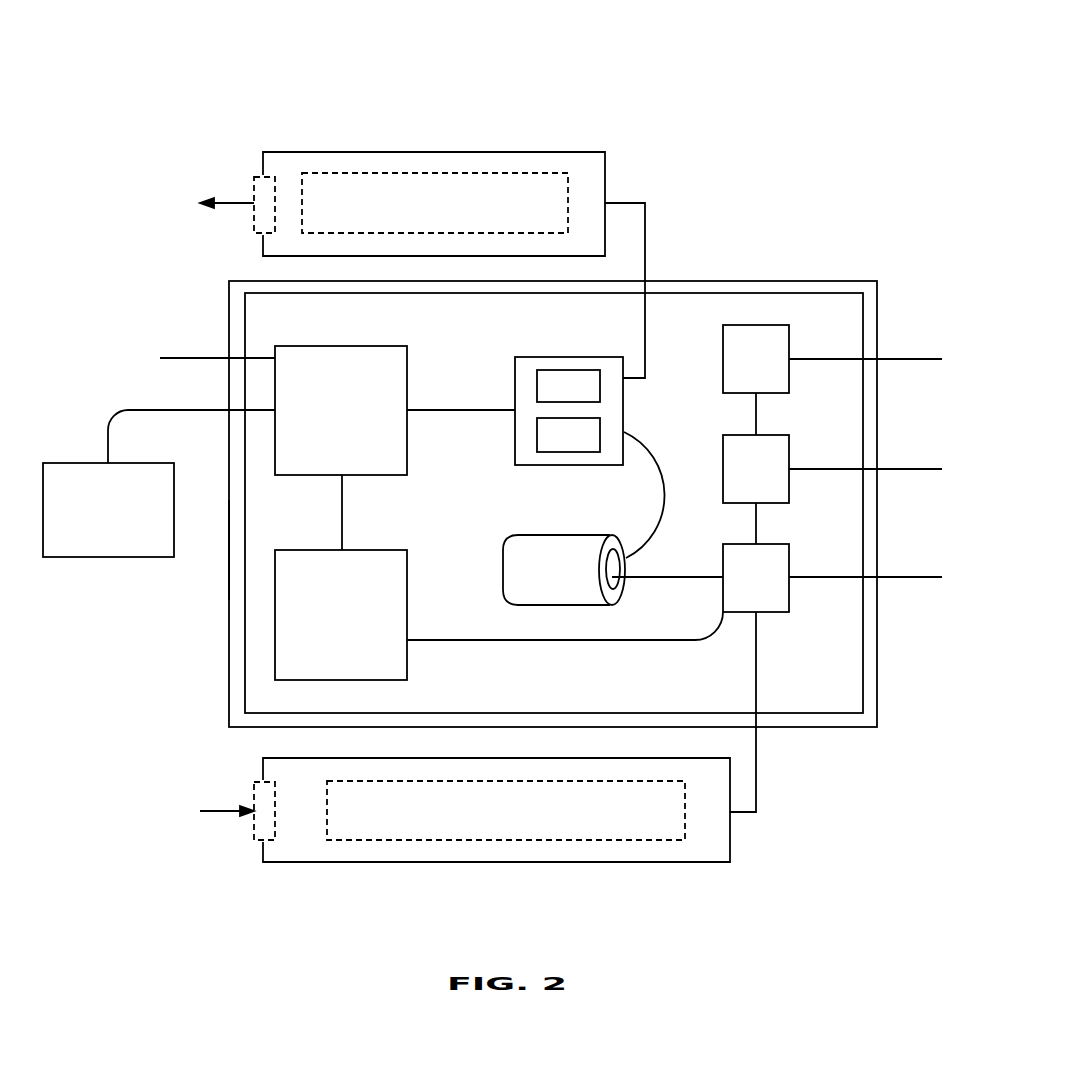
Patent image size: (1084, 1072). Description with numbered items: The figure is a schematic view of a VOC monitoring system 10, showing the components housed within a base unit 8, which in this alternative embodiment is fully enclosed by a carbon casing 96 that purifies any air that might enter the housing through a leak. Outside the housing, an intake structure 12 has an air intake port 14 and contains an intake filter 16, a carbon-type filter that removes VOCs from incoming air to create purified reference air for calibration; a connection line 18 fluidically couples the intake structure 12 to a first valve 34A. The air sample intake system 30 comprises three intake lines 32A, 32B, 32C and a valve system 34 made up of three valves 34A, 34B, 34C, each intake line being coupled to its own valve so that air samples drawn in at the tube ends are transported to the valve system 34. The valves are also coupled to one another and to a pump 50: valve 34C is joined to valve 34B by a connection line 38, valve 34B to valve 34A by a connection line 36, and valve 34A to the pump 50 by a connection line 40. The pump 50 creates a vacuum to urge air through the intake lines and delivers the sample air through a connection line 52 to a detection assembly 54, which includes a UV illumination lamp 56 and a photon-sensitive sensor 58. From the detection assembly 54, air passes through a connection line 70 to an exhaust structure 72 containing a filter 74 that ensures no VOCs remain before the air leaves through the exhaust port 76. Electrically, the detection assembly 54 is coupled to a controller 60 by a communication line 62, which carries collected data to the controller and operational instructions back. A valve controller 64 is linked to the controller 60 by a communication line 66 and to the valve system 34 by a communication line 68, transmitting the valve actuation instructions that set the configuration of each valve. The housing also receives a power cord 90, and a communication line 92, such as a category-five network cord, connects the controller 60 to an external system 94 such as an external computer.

The base unit 8 is at (243, 592).
The VOC monitoring system 10 is at (244, 70).
The intake structure 12 is at (552, 862).
The air intake port 14 is at (252, 822).
The intake filter 16 is at (407, 842).
The connection line 18 is at (756, 752).
The air sample intake system 30 is at (893, 296).
The intake line 32A is at (901, 578).
The intake line 32B is at (901, 470).
The intake line 32C is at (901, 360).
The valve system 34 is at (779, 650).
The first valve 34A is at (792, 569).
The valve 34B is at (792, 459).
The valve 34C is at (792, 349).
The connection line 36 is at (755, 533).
The connection line 38 is at (755, 423).
The connection line 40 is at (636, 580).
The pump 50 is at (566, 533).
The connection line 52 is at (663, 463).
The detection assembly 54 is at (514, 428).
The UV illumination lamp 56 is at (556, 452).
The photon-sensitive sensor 58 is at (555, 370).
The controller 60 is at (362, 475).
The communication line 62 is at (460, 409).
The valve controller 64 is at (410, 598).
The communication line 66 is at (340, 533).
The communication line 68 is at (428, 638).
The connection line 70 is at (647, 355).
The exhaust structure 72 is at (510, 152).
The filter 74 is at (410, 172).
The exhaust port 76 is at (254, 182).
The power cord 90 is at (212, 357).
The communication line 92 is at (212, 409).
The external system 94 is at (90, 557).
The carbon casing 96 is at (226, 703).